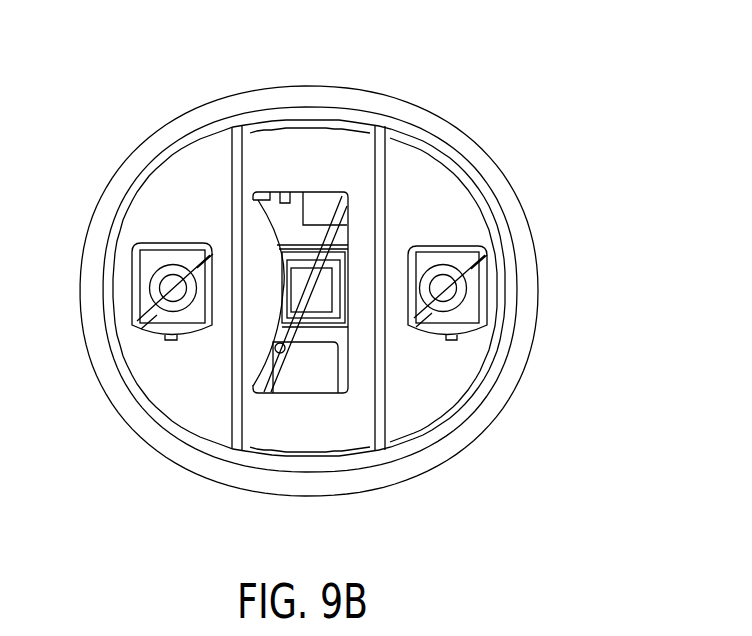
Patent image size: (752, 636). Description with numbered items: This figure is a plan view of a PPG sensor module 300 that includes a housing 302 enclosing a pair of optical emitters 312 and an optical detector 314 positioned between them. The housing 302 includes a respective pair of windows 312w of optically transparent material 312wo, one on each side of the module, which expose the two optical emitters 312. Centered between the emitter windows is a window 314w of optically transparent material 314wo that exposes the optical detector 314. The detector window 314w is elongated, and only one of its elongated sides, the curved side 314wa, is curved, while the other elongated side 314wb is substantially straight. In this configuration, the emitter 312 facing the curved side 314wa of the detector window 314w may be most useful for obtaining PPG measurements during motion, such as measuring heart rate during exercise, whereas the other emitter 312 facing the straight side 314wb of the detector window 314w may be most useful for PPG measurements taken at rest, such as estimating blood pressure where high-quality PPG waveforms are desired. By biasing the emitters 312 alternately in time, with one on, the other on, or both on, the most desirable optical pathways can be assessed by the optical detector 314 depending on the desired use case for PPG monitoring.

The PPG sensor module 300 is at (470, 102).
The housing 302 is at (531, 248).
The optical emitter 312 is at (173, 285).
The window 312w is at (172, 340).
The optically transparent material 312wo is at (182, 262).
The optical detector 314 is at (302, 308).
The window 314w is at (303, 192).
The curved elongated side 314wa is at (283, 290).
The straight elongated side 314wb is at (342, 247).
The optically transparent material 314wo is at (303, 370).